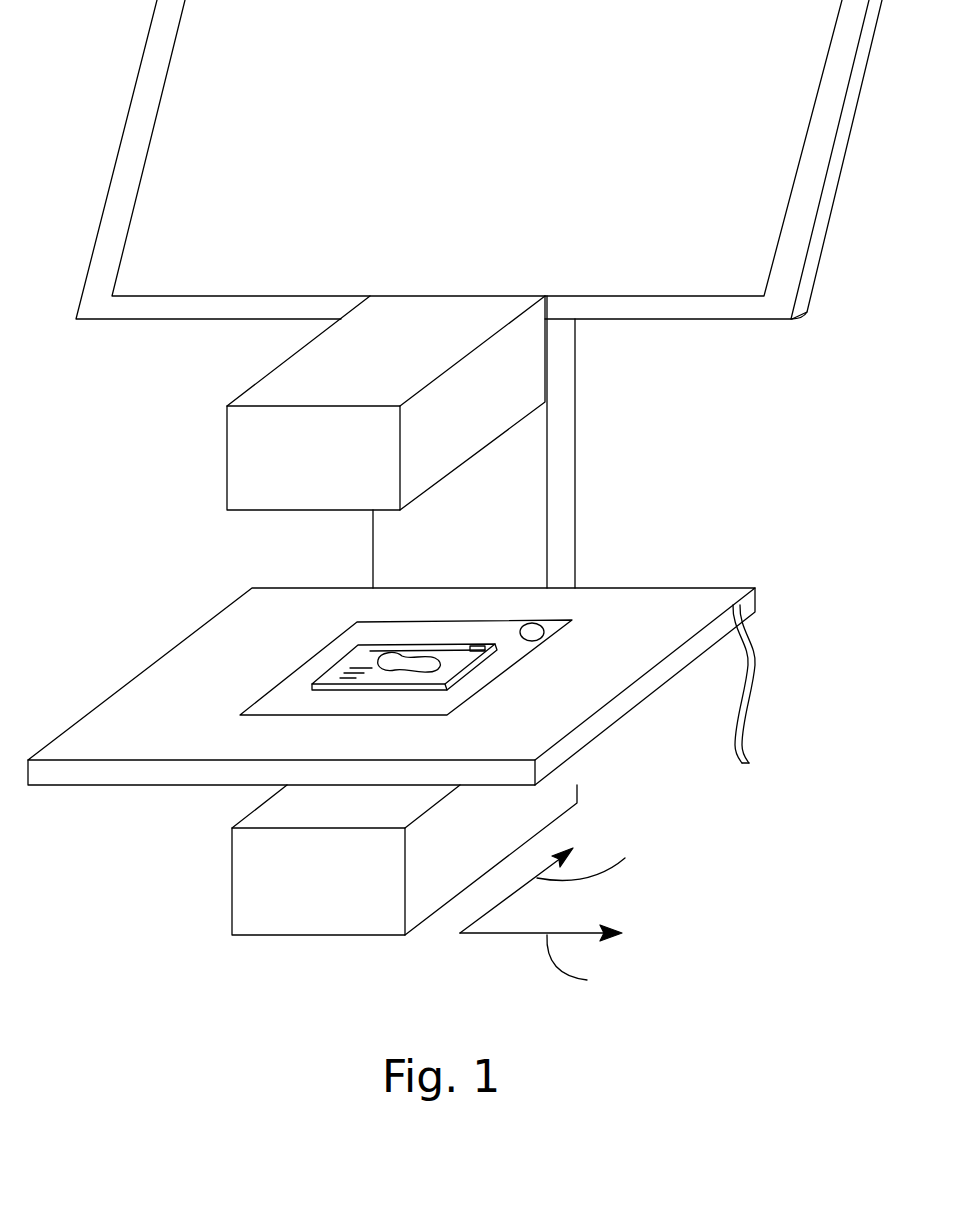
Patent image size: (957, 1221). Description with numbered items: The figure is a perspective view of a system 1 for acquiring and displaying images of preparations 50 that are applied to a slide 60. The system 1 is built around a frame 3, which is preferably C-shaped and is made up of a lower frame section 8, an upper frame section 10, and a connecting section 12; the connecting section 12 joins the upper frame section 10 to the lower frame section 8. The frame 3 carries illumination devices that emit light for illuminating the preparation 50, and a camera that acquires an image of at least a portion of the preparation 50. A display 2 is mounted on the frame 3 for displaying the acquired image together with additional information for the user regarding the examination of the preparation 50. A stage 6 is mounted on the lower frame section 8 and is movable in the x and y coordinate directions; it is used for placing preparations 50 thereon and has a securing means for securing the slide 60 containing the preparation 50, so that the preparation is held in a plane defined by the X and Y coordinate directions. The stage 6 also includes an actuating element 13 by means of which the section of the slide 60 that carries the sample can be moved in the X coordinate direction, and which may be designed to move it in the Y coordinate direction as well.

The system 1 is at (455, 499).
The display 2 is at (473, 146).
The frame 3 is at (308, 374).
The stage 6 is at (618, 705).
The lower frame section 8 is at (328, 892).
The upper frame section 10 is at (303, 470).
The connecting section 12 is at (563, 433).
The actuating element 13 is at (743, 707).
The preparation 50 is at (380, 655).
The slide 60 is at (420, 687).